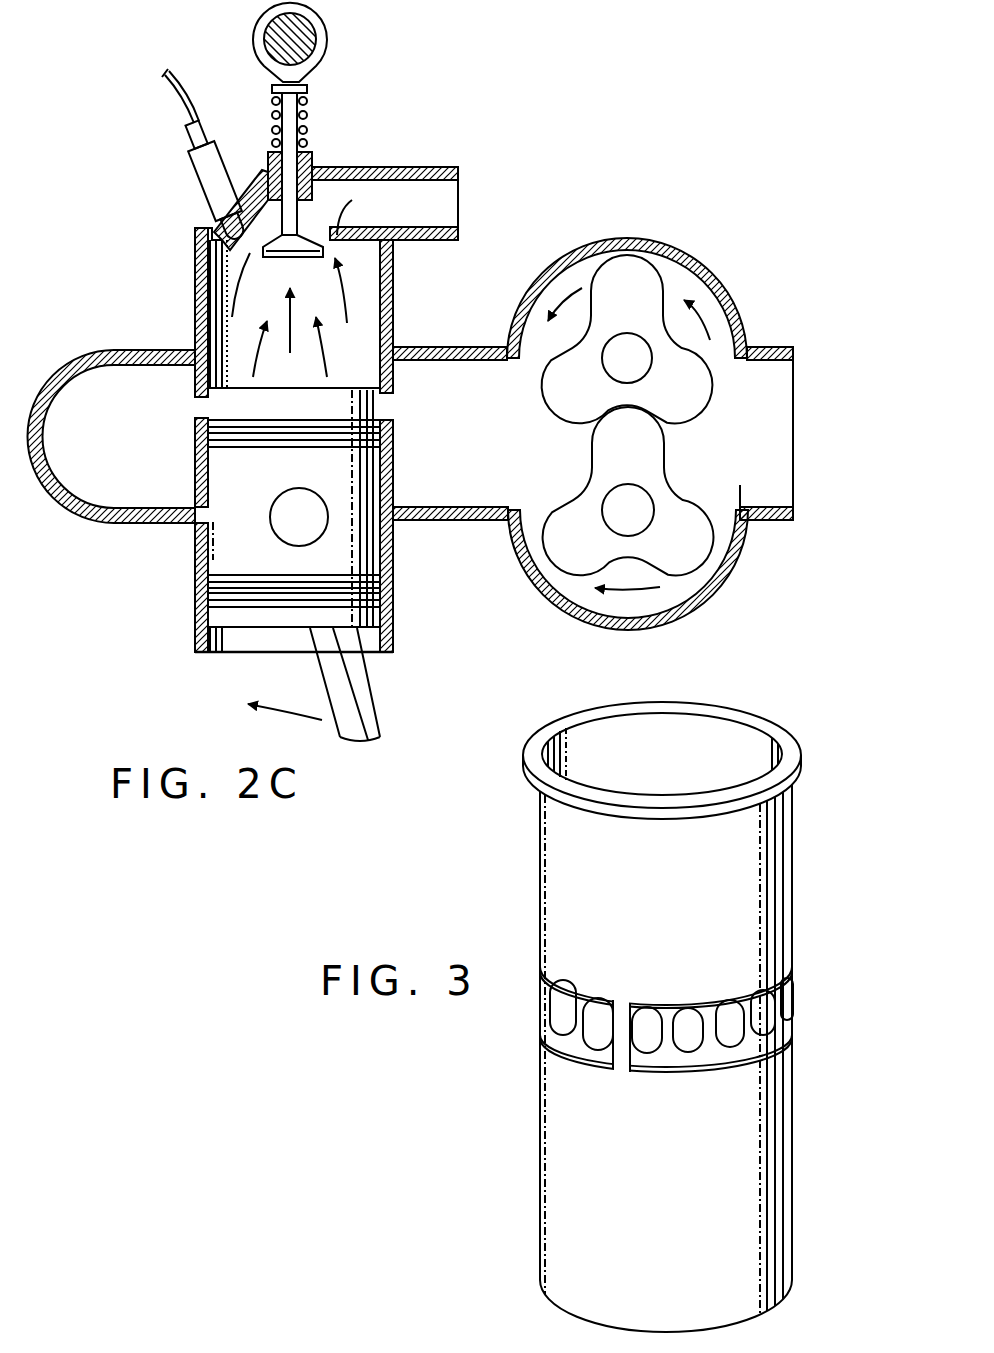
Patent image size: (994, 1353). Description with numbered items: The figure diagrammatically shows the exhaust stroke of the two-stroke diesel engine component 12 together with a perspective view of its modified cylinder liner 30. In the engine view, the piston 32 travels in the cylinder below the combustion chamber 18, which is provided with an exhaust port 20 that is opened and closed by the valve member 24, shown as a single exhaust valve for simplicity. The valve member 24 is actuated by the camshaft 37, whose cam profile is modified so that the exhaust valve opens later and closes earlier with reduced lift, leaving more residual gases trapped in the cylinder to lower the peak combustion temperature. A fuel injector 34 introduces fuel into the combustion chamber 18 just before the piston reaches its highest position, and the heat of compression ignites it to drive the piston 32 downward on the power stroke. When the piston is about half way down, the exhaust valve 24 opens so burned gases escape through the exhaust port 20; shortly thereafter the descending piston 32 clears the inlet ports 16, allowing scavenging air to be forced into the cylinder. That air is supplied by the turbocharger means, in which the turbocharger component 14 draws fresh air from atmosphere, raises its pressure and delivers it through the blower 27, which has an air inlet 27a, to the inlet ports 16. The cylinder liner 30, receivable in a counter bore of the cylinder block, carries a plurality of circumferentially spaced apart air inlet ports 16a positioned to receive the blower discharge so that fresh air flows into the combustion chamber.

In FIG. 2C, the two-stroke diesel engine component 12 is at (441, 144).
In FIG. 2C, the turbocharger component 14 is at (711, 244).
In FIG. 2C, the inlet ports 16 is at (198, 420).
In FIG. 3, the air inlet ports 16a is at (688, 1035).
In FIG. 2C, the combustion chamber 18 is at (368, 318).
In FIG. 2C, the exhaust port 20 is at (385, 203).
In FIG. 2C, the valve member 24 is at (293, 110).
In FIG. 2C, the blower 27 is at (82, 358).
In FIG. 2C, the air inlet 27a is at (765, 498).
In FIG. 3, the cylinder liner 30 is at (811, 846).
In FIG. 2C, the piston 32 is at (230, 560).
In FIG. 2C, the fuel injector 34 is at (218, 187).
In FIG. 2C, the camshaft 37 is at (318, 32).